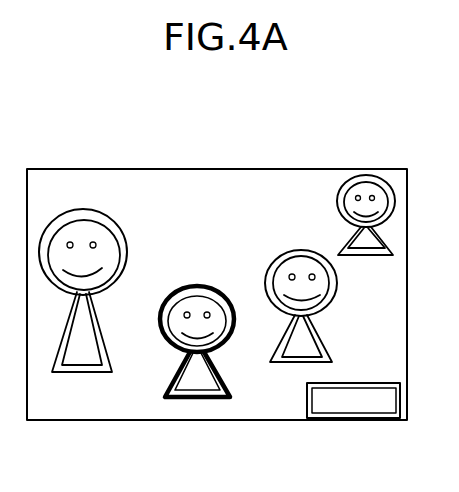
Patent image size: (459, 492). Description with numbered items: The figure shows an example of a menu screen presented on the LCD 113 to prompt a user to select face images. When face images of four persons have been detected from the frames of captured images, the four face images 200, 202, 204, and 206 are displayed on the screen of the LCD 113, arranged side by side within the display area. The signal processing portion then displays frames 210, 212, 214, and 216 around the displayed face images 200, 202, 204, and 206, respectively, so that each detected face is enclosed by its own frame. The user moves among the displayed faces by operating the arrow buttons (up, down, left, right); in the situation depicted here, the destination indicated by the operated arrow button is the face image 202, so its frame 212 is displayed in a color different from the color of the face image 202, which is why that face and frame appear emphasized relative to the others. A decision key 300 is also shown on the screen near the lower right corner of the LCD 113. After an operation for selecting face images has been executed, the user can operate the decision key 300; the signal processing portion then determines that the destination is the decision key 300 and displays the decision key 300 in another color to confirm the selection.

The LCD 113 is at (252, 168).
The face image 200 is at (90, 209).
The face image 202 is at (198, 300).
The face image 204 is at (297, 263).
The face image 206 is at (365, 188).
The frame 210 is at (99, 292).
The frame 212 is at (190, 398).
The frame 214 is at (300, 363).
The frame 216 is at (367, 256).
The decision key 300 is at (360, 419).